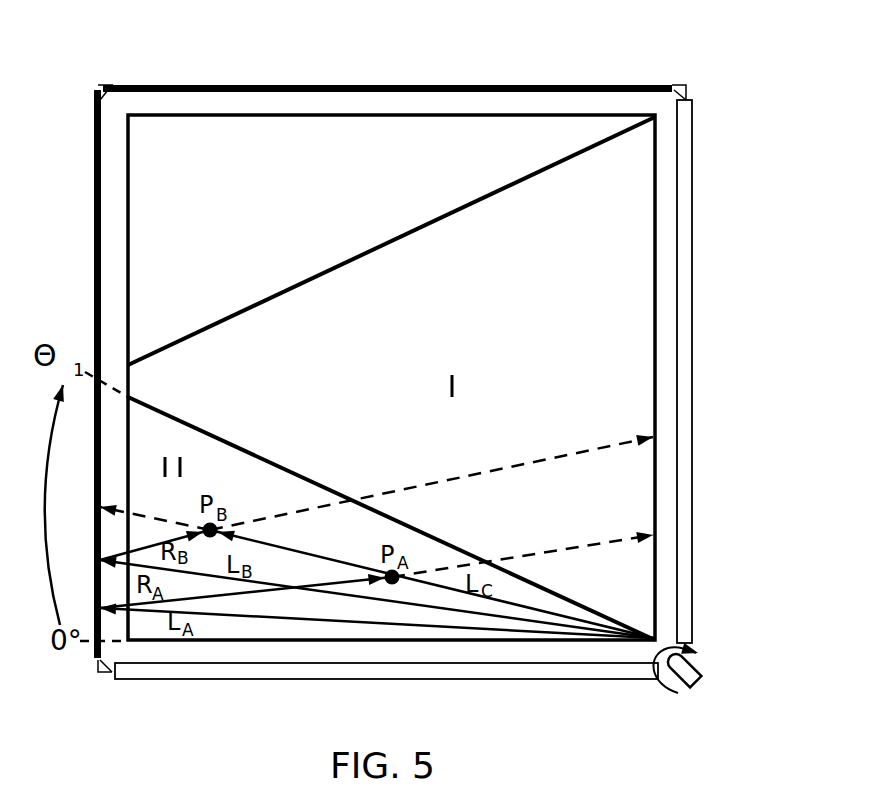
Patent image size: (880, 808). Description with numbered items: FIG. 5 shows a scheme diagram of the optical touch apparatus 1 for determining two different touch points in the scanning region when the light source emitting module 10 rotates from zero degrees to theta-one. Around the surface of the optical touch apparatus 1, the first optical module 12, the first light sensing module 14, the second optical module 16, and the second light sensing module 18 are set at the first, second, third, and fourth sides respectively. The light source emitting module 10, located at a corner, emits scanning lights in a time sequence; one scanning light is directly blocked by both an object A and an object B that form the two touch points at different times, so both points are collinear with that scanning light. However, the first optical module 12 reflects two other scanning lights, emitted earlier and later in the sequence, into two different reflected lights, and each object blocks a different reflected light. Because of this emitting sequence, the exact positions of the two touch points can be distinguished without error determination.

The optical touch apparatus 1 is at (503, 58).
The light source emitting module 10 is at (672, 688).
The first optical module 12 is at (97, 212).
The first light sensing module 14 is at (683, 393).
The second optical module 16 is at (181, 86).
The second light sensing module 18 is at (250, 680).